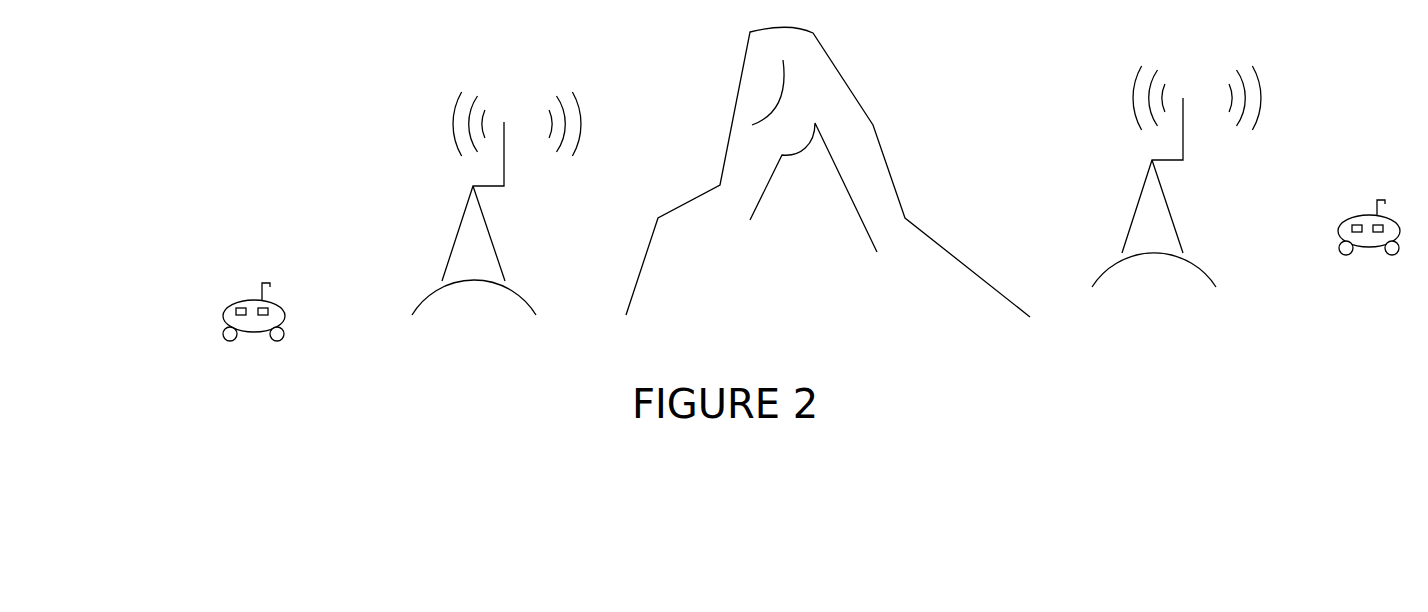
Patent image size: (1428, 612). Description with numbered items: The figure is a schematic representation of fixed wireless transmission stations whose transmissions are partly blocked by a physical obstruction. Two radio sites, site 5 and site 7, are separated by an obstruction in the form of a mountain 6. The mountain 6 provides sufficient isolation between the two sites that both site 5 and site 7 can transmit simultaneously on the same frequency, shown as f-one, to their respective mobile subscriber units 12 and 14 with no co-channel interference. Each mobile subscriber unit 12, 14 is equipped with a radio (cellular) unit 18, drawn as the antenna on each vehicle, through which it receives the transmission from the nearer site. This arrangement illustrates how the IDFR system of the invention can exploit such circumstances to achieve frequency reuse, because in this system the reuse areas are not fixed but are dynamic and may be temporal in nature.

The radio site 5 is at (460, 353).
The mountain 6 is at (773, 290).
The radio site 7 is at (1143, 311).
The mobile subscriber unit 12 is at (255, 332).
The mobile subscriber unit 14 is at (1368, 252).
The radio unit 18 is at (277, 307).